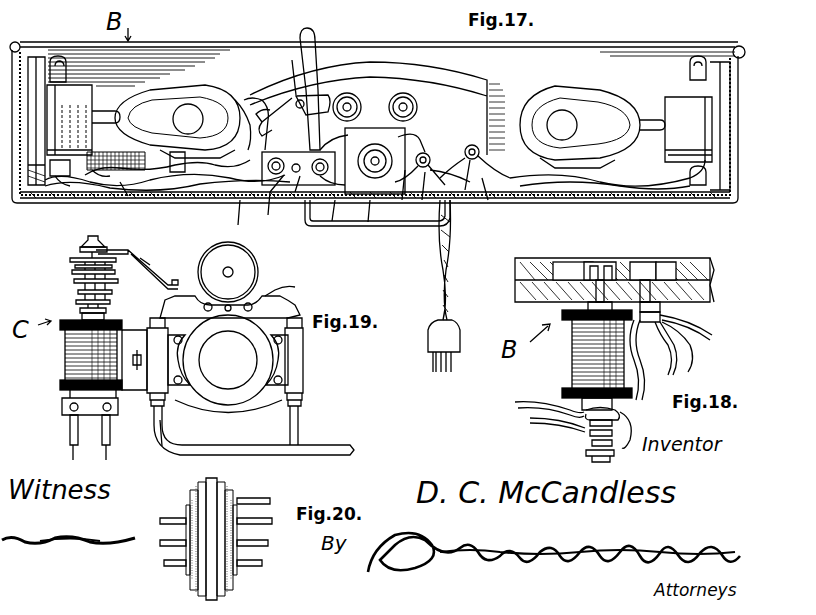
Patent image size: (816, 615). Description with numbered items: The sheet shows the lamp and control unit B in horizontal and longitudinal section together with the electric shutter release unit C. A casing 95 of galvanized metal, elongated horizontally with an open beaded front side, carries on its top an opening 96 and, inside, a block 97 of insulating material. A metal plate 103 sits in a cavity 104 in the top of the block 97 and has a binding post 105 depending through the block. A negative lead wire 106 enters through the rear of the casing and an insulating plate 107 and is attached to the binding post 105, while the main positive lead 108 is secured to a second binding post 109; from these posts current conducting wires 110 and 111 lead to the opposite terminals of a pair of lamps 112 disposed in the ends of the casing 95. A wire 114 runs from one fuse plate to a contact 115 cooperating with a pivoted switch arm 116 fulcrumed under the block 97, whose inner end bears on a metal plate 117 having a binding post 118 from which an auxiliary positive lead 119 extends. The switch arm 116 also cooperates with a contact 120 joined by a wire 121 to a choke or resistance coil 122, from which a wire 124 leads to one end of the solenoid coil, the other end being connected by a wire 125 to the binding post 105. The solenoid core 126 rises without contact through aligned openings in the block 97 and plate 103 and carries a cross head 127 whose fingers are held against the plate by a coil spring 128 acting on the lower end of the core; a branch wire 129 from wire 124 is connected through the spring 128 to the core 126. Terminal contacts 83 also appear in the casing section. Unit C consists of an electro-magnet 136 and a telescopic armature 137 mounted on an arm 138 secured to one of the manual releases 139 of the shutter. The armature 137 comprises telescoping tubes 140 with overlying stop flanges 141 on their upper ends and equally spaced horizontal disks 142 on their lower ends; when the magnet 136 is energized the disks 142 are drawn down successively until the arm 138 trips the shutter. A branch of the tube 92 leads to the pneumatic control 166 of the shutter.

In FIG. 17, the terminal contacts 83 is at (378, 128).
In FIG. 19, the tube 92 is at (154, 440).
In FIG. 17, the casing 95 is at (636, 48).
In FIG. 18, the opening 96 is at (680, 262).
In FIG. 17, the block 97 is at (425, 92).
In FIG. 18, the block 97 is at (712, 266).
In FIG. 18, the metal plate 103 is at (668, 262).
In FIG. 18, the cavity 104 is at (578, 262).
In FIG. 17, the binding post 105 is at (440, 140).
In FIG. 18, the binding post 105 is at (678, 372).
In FIG. 17, the negative lead wire 106 is at (422, 200).
In FIG. 17, the insulating plate 107 is at (370, 226).
In FIG. 17, the main positive lead 108 is at (458, 215).
In FIG. 17, the second binding post 109 is at (471, 144).
In FIG. 17, the current conducting wire 110 is at (402, 200).
In FIG. 17, the current conducting wire 111 is at (488, 200).
In FIG. 17, the lamps 112 is at (152, 118).
In FIG. 17, the wire 114 is at (292, 60).
In FIG. 17, the contact 115 is at (325, 95).
In FIG. 17, the pivoted switch arm 116 is at (308, 50).
In FIG. 17, the metal plate 117 is at (312, 222).
In FIG. 17, the binding post 118 is at (610, 106).
In FIG. 17, the auxiliary positive lead 119 is at (343, 226).
In FIG. 17, the contact 120 is at (266, 95).
In FIG. 17, the wire 121 is at (235, 100).
In FIG. 17, the choke or resistance coil 122 is at (128, 196).
In FIG. 17, the wire 124 is at (249, 200).
In FIG. 18, the wire 124 is at (520, 405).
In FIG. 17, the wire 125 is at (418, 128).
In FIG. 18, the wire 125 is at (660, 405).
In FIG. 18, the core 126 is at (640, 262).
In FIG. 18, the cross head 127 is at (598, 262).
In FIG. 18, the coil spring 128 is at (616, 450).
In FIG. 17, the branch wire 129 is at (357, 130).
In FIG. 18, the branch wire 129 is at (560, 432).
In FIG. 19, the electro-magnet 136 is at (62, 366).
In FIG. 19, the telescopic armature 137 is at (65, 291).
In FIG. 20, the telescopic armature 137 is at (263, 560).
In FIG. 19, the arm 138 is at (138, 258).
In FIG. 19, the manual release 139 is at (170, 300).
In FIG. 19, the telescoping tubes 140 is at (68, 262).
In FIG. 20, the telescoping tubes 140 is at (190, 558).
In FIG. 19, the stop flanges 141 is at (80, 243).
In FIG. 20, the stop flanges 141 is at (240, 498).
In FIG. 19, the disks 142 is at (108, 280).
In FIG. 20, the disks 142 is at (165, 540).
In FIG. 19, the pneumatic control 166 is at (305, 375).